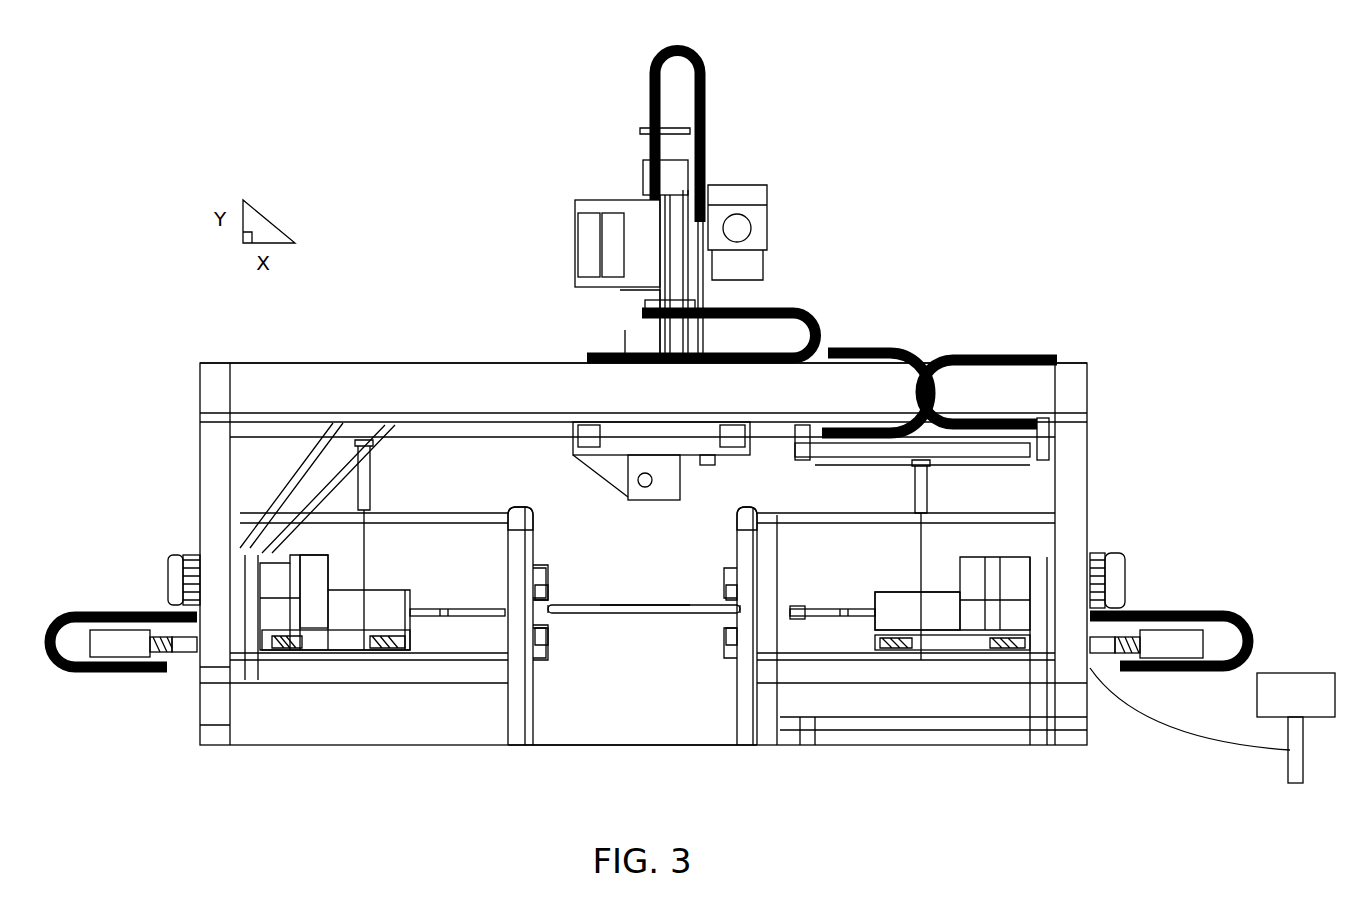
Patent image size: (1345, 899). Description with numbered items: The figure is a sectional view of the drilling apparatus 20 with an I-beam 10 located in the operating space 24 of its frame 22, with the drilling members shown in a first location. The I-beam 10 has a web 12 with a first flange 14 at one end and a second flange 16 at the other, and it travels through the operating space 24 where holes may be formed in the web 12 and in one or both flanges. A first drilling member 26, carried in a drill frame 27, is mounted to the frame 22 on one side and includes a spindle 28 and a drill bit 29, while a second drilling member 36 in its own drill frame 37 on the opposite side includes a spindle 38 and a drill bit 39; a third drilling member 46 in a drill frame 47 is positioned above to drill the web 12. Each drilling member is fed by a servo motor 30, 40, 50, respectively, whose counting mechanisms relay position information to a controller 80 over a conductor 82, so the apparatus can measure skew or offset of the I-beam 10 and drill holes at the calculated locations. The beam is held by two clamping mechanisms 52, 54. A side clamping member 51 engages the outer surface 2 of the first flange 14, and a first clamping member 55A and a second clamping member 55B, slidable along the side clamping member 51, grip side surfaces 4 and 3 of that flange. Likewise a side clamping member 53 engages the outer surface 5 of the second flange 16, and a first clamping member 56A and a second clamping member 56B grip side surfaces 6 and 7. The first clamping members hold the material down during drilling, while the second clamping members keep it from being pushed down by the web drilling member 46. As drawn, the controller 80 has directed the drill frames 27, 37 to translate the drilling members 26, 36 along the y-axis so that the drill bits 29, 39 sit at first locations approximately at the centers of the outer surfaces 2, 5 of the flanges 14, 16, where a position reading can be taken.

The outer surface 2 is at (535, 632).
The side surface 3 is at (548, 648).
The side surface 4 is at (548, 590).
The outer surface 5 is at (794, 606).
The side surface 6 is at (738, 583).
The side surface 7 is at (745, 652).
The I-beam 10 is at (640, 625).
The web 12 is at (628, 602).
The first flange 14 is at (550, 592).
The second flange 16 is at (737, 591).
The drilling apparatus 20 is at (980, 305).
The frame 22 is at (1063, 482).
The operating space 24 is at (620, 715).
The first drilling member 26 is at (408, 590).
The drill frame 27 is at (258, 667).
The spindle 28 is at (383, 598).
The drill bit 29 is at (450, 610).
The servo motor 30 is at (110, 632).
The second drilling member 36 is at (880, 585).
The drill frame 37 is at (1030, 668).
The spindle 38 is at (903, 598).
The drill bit 39 is at (823, 611).
The servo motor 40 is at (1167, 640).
The third drilling member 46 is at (720, 459).
The drill frame 47 is at (625, 497).
The servo motor 50 is at (668, 87).
The side clamping member 51 is at (533, 717).
The clamping mechanism 52 is at (525, 515).
The side clamping member 53 is at (787, 538).
The clamping mechanism 54 is at (777, 548).
The first clamping member 55A is at (545, 575).
The second clamping member 55B is at (545, 655).
The first clamping member 56A is at (742, 572).
The second clamping member 56B is at (745, 655).
The controller 80 is at (1283, 703).
The conductor 82 is at (1182, 730).